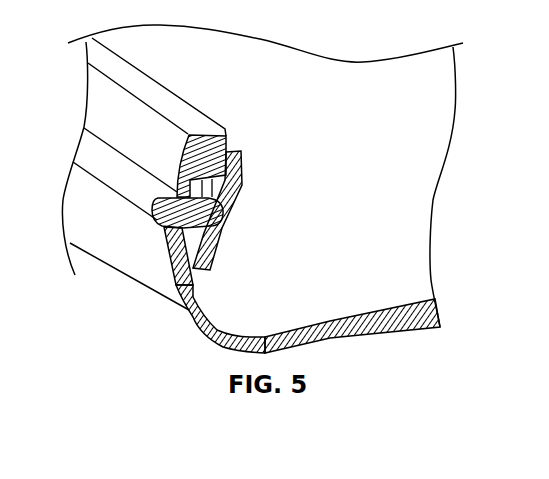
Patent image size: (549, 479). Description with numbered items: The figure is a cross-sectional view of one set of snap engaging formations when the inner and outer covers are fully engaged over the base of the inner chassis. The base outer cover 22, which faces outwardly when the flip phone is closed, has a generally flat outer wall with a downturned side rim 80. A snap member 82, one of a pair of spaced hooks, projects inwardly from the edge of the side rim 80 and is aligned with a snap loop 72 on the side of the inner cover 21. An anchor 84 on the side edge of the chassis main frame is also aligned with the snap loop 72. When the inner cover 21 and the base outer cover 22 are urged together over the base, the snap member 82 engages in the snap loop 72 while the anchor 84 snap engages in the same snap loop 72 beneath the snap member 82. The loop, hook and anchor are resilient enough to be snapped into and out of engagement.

The inner cover 21 is at (166, 91).
The base outer cover 22 is at (330, 322).
The snap loop 72 is at (172, 303).
The side rim 80 is at (157, 250).
The snap member 82 is at (238, 200).
The anchor 84 is at (153, 220).